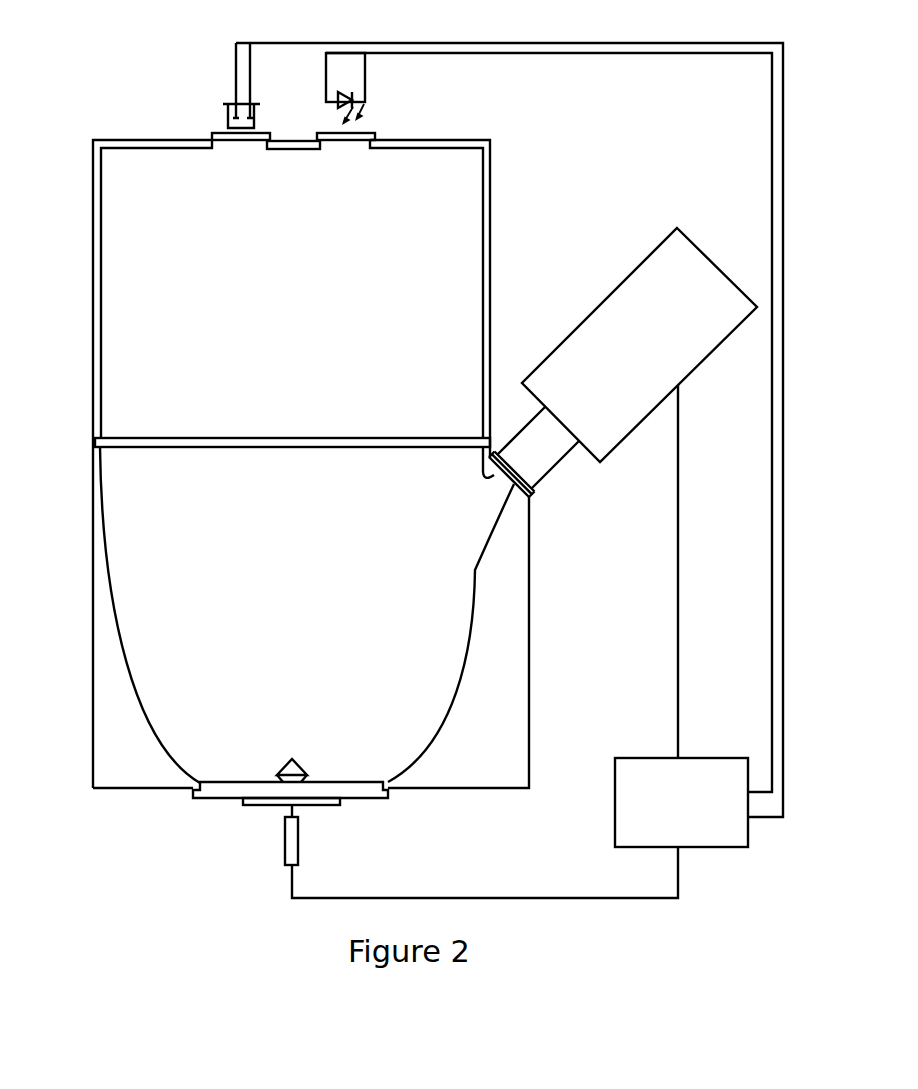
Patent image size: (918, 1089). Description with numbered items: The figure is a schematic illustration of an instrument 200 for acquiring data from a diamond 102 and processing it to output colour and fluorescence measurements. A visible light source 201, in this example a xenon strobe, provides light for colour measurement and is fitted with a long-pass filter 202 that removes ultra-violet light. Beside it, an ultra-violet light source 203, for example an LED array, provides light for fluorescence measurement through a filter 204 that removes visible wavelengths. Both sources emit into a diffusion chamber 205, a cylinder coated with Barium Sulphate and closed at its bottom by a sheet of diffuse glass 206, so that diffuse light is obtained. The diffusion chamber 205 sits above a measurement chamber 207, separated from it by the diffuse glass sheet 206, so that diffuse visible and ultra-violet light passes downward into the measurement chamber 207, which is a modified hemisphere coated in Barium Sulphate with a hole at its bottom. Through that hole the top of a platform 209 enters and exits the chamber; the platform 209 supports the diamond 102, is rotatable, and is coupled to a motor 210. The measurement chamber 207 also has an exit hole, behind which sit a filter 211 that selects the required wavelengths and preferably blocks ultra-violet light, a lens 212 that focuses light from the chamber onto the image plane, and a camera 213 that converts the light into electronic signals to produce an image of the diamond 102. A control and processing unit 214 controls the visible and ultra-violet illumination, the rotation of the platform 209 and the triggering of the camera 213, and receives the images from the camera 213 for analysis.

The instrument 200 is at (146, 79).
The visible light source 201 is at (221, 113).
The long-pass filter 202 is at (211, 136).
The ultra-violet light source 203 is at (372, 100).
The filter 204 is at (378, 137).
The diffusion chamber 205 is at (96, 292).
The diffuse glass sheet 206 is at (293, 437).
The measurement chamber 207 is at (101, 572).
The diamond 102 is at (277, 776).
The platform 209 is at (220, 798).
The motor 210 is at (299, 840).
The filter 211 is at (534, 497).
The lens 212 is at (553, 466).
The camera 213 is at (600, 302).
The control and processing unit 214 is at (706, 849).